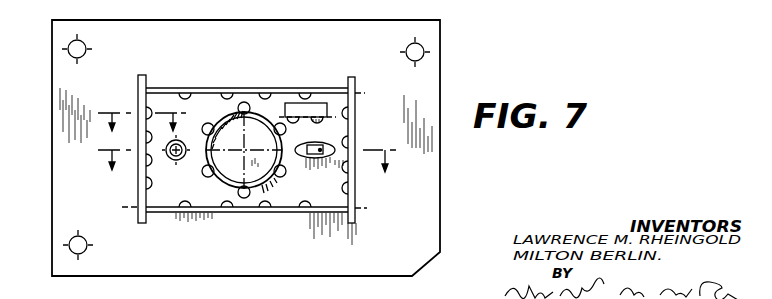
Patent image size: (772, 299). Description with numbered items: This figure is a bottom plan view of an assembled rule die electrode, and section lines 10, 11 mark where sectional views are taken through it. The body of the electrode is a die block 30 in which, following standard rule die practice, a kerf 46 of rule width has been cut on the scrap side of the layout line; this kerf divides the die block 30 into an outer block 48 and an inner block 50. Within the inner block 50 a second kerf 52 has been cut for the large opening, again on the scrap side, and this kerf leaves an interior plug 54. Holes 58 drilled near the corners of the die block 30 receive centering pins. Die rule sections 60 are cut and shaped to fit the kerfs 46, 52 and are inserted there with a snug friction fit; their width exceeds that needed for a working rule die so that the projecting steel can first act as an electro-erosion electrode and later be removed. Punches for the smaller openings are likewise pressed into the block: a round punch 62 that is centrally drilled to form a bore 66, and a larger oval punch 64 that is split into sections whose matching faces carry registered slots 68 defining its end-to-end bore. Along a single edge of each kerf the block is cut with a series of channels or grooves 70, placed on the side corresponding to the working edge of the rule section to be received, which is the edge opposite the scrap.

The section line 10- 10 is at (247, 174).
The section line 11- 11 is at (136, 126).
The die block 30 is at (443, 194).
The kerf 46 is at (159, 90).
The outer block 48 is at (433, 92).
The inner block 50 is at (333, 199).
The kerf 52 is at (219, 180).
The interior plug 54 is at (267, 148).
The holes 58 is at (82, 45).
The die rule sections 60 is at (139, 98).
The round punch 62 is at (178, 143).
The oval punch 64 is at (333, 149).
The bore 66 is at (173, 161).
The registered slots 68 is at (319, 148).
The channels or grooves 70 is at (242, 108).